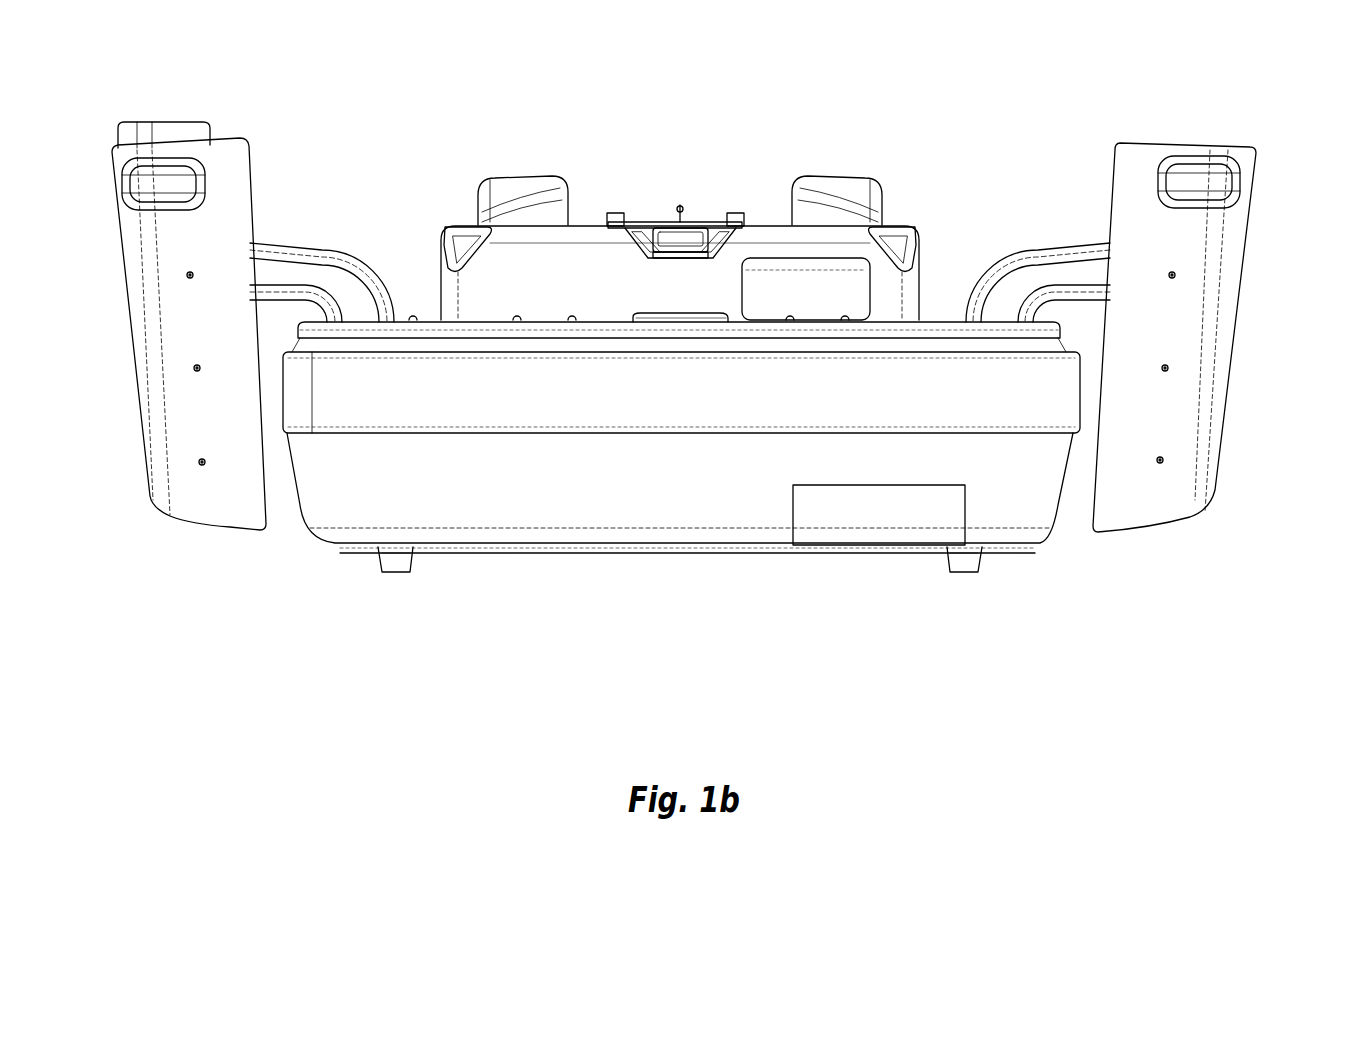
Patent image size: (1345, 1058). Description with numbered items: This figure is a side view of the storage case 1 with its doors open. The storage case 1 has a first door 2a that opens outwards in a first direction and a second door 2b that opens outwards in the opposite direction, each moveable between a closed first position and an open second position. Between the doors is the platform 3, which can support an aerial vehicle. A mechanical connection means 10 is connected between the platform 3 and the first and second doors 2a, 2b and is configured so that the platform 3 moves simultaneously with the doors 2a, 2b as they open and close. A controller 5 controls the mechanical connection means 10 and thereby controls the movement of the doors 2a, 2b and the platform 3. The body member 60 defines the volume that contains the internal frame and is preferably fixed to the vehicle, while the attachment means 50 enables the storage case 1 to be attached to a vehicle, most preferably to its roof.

The storage case 1 is at (930, 112).
The first door 2a is at (1215, 243).
The second door 2b is at (140, 240).
The platform 3 is at (588, 230).
The controller 5 is at (840, 505).
The mechanical connection means 10 is at (320, 255).
The attachment means 50 is at (395, 562).
The body member 60 is at (318, 527).